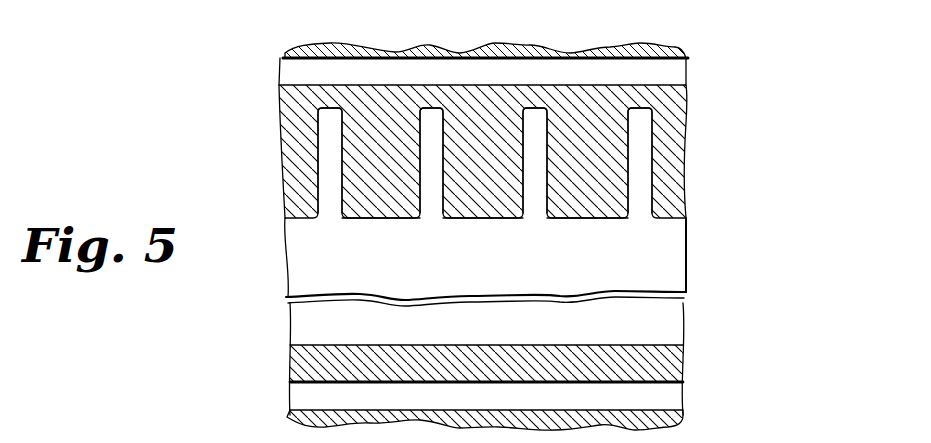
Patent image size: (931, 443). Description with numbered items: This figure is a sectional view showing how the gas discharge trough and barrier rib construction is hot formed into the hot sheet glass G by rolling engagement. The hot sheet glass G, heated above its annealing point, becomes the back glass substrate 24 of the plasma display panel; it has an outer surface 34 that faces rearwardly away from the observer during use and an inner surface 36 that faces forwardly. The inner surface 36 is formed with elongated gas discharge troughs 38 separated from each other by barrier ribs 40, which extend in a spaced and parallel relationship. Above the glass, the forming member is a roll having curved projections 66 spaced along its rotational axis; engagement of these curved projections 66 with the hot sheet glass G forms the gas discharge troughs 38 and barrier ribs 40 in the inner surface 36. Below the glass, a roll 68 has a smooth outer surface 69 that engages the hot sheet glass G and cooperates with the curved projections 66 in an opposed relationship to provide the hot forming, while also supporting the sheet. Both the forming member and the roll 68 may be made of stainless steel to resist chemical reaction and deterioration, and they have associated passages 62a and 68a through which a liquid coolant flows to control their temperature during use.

The back glass substrate 24 is at (695, 300).
The outer surface 34 is at (353, 344).
The inner surface 36 is at (655, 108).
The gas discharge troughs 38 is at (367, 218).
The barrier ribs 40 is at (330, 113).
The passage 62a is at (308, 73).
The curved projections 66 is at (447, 185).
The roll 68 is at (662, 365).
The passage 68a is at (662, 392).
The smooth outer surface 69 is at (632, 345).
The hot sheet glass G is at (273, 253).